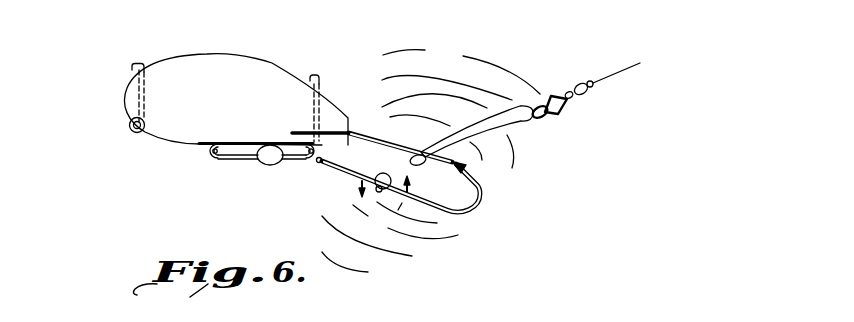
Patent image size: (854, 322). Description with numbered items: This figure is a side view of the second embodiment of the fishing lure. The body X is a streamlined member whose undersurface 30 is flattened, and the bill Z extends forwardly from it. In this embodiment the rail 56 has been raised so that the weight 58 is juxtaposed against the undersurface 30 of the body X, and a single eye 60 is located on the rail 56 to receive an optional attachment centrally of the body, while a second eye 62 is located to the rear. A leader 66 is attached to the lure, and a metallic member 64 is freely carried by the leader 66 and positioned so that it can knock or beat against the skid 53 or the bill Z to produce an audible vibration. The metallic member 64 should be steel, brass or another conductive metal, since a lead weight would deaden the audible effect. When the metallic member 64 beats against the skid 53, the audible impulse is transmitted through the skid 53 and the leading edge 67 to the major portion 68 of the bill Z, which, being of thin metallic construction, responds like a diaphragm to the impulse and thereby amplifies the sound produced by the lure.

The body X is at (232, 111).
The second eye 62 is at (129, 128).
The single eye 60 is at (238, 186).
The undersurface 30 is at (245, 146).
The rail 56 is at (249, 160).
The weight 58 is at (268, 166).
The skid 53 is at (420, 202).
The leading edge 67 is at (467, 163).
The major portion 68 is at (373, 128).
The leader 66 is at (499, 113).
The bill Z is at (411, 148).
The metallic member 64 is at (377, 192).